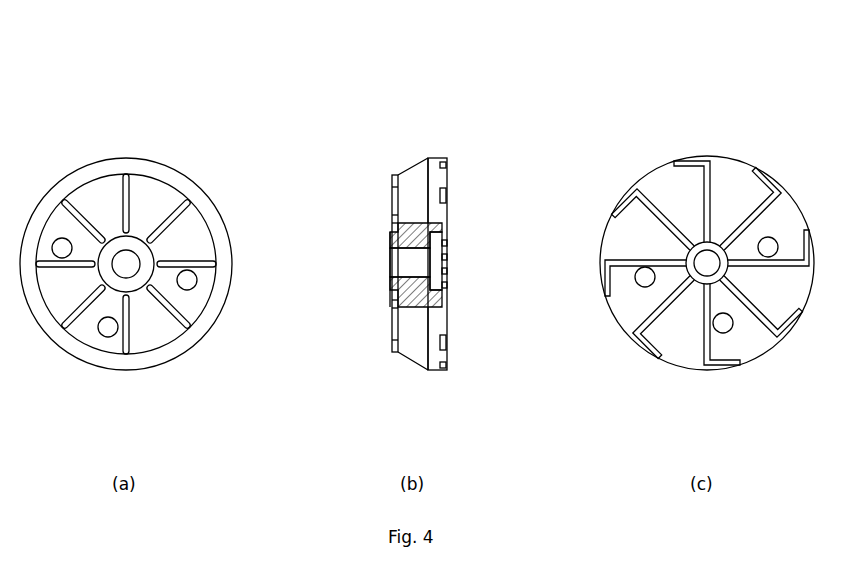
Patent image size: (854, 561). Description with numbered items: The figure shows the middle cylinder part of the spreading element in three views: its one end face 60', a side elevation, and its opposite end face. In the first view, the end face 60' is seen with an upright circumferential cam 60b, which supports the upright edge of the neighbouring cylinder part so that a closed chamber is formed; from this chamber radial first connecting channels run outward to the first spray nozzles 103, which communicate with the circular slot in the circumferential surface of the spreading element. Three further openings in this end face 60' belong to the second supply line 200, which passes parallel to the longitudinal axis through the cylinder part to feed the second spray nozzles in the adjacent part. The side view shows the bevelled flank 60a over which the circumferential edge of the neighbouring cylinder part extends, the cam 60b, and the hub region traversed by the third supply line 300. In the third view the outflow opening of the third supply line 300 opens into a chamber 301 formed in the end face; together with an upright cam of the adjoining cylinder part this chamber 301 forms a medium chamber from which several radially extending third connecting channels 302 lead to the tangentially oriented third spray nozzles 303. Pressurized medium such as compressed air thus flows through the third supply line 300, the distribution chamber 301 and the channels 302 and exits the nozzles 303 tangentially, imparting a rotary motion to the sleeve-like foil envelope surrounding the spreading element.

The end face 60' is at (126, 229).
The bevelled flank 60a is at (413, 163).
The upright circumferential cam 60b is at (390, 287).
The first spray nozzles 103 is at (123, 190).
The second supply line 200 is at (61, 252).
The third supply line 300 is at (126, 264).
The chamber 301 is at (700, 260).
The third connecting channels 302 is at (638, 225).
The third spray nozzles 303 is at (608, 287).